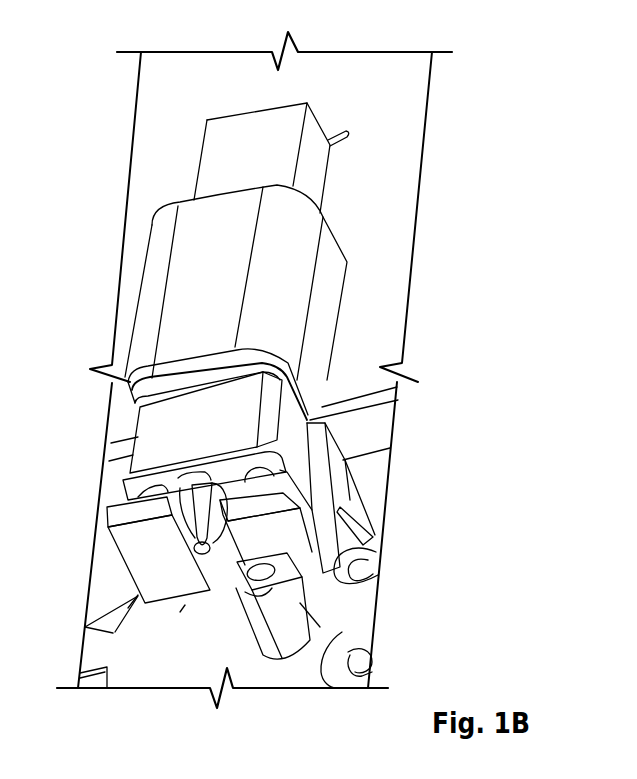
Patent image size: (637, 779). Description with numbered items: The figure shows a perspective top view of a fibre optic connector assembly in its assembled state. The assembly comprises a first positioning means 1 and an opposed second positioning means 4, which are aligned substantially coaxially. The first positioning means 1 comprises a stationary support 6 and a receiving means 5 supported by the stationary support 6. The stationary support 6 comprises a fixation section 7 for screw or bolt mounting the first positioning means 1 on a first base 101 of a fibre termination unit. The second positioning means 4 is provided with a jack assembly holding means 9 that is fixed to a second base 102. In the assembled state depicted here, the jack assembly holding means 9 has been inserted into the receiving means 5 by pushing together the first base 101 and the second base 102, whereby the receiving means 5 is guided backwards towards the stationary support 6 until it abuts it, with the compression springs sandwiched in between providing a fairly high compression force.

The first positioning means 1 is at (145, 279).
The second positioning means 4 is at (185, 133).
The receiving means 5 is at (292, 270).
The stationary support 6 is at (330, 470).
The fixation section 7 is at (235, 590).
The jack assembly holding means 9 is at (282, 118).
The first base 101 is at (350, 622).
The second base 102 is at (402, 125).